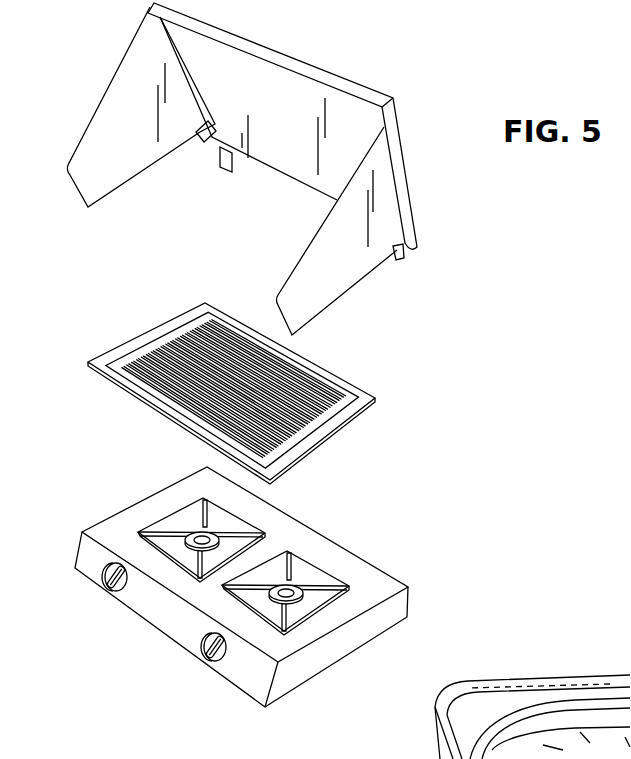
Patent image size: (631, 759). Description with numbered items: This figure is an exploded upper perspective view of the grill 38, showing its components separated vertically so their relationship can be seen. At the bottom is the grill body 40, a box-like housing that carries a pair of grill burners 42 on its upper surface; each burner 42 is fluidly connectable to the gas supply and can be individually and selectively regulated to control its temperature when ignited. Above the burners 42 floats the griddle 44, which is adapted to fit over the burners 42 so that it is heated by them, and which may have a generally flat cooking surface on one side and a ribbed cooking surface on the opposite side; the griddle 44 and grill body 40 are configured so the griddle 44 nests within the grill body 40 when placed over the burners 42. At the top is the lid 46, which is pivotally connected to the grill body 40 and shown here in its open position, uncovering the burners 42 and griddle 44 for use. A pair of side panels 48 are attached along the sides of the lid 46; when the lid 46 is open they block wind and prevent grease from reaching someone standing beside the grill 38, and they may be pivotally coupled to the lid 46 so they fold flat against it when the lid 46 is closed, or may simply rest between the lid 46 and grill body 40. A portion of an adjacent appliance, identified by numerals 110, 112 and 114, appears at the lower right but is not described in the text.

The grill 38 is at (428, 73).
The grill body 40 is at (235, 688).
The grill burner 42 is at (197, 525).
The griddle 44 is at (330, 388).
The lid 46 is at (293, 117).
The side panel 48 is at (135, 138).
The sink module 110 is at (475, 685).
The sink rim 112 is at (538, 676).
The sink counter surface 114 is at (592, 677).